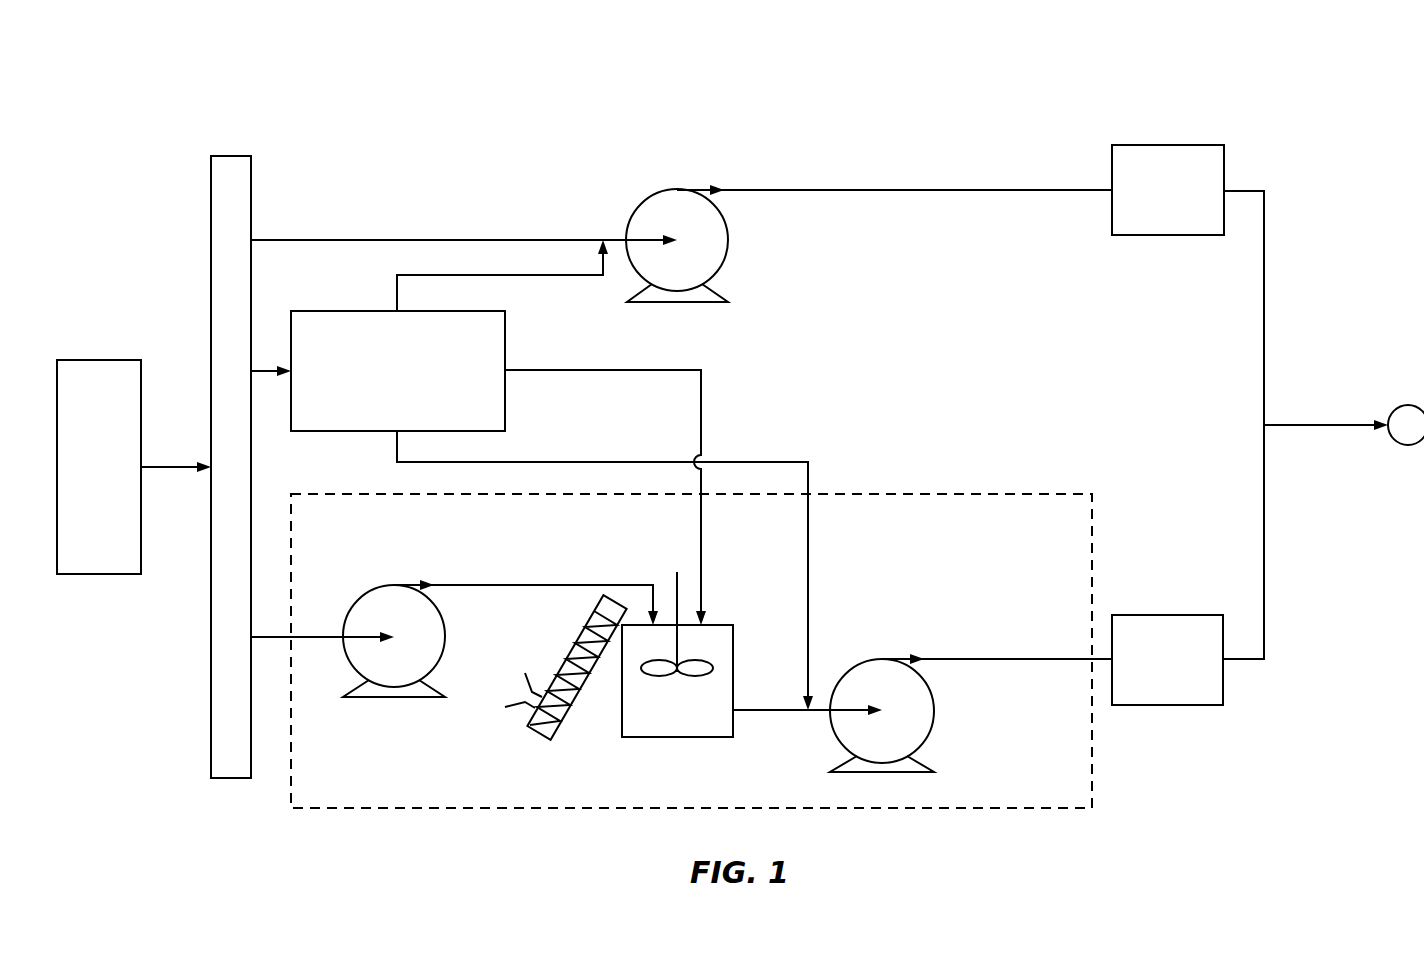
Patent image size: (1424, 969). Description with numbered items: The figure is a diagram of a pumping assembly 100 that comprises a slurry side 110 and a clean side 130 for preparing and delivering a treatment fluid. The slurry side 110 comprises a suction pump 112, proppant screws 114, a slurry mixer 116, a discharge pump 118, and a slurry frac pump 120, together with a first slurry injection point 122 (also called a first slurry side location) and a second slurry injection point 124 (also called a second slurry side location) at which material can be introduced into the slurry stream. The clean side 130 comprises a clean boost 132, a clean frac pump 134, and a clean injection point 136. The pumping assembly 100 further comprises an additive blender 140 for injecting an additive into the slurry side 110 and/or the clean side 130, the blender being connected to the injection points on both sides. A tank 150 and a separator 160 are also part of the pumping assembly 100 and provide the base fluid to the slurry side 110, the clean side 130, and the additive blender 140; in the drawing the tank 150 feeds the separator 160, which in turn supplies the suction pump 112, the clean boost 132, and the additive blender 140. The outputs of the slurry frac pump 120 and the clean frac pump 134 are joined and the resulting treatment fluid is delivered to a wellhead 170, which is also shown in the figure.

The pumping assembly 100 is at (516, 100).
The slurry side 110 is at (951, 457).
The suction pump 112 is at (348, 641).
The proppant screws 114 is at (538, 735).
The slurry mixer 116 is at (677, 738).
The discharge pump 118 is at (882, 715).
The slurry frac pump 120 is at (1168, 705).
The first slurry injection point 122 is at (703, 620).
The second slurry injection point 124 is at (808, 700).
The clean side 130 is at (897, 148).
The clean boost 132 is at (677, 245).
The clean frac pump 134 is at (1225, 158).
The clean injection point 136 is at (603, 240).
The additive blender 140 is at (378, 371).
The tank 150 is at (134, 467).
The separator 160 is at (211, 272).
The wellhead 170 is at (1406, 405).